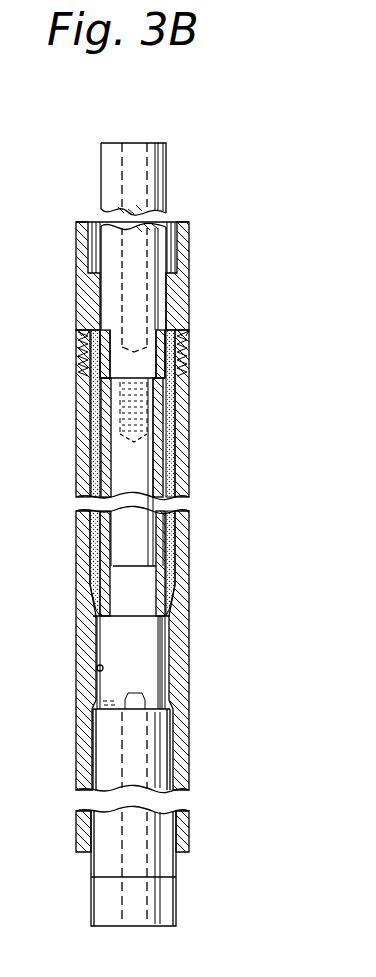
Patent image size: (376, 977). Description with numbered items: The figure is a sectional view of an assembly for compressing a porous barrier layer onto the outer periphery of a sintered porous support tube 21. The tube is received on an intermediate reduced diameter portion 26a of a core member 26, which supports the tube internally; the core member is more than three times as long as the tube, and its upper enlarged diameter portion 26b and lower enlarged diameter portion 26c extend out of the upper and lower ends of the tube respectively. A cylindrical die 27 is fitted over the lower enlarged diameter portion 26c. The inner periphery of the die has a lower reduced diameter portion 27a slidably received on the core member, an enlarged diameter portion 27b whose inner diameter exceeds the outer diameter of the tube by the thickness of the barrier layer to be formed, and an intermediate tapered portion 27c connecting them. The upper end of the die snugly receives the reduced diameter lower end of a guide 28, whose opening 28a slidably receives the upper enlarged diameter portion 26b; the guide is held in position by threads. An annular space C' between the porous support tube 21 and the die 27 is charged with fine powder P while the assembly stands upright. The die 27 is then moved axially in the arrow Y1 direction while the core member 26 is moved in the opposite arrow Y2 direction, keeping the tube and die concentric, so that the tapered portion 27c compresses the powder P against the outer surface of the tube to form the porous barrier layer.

The porous support tube 21 is at (98, 460).
The core member 26 is at (145, 478).
The intermediate reduced diameter portion 26a is at (135, 555).
The upper enlarged diameter portion 26b is at (158, 258).
The lower enlarged diameter portion 26c is at (160, 668).
The cylindrical die 27 is at (84, 550).
The lower reduced diameter portion 27a is at (97, 668).
The enlarged diameter portion 27b is at (170, 432).
The intermediate tapered portion 27c is at (170, 604).
The guide 28 is at (80, 298).
The opening 28a is at (158, 303).
The annular space C' is at (108, 413).
The fine powder P is at (92, 590).
The arrow direction Y1 is at (55, 212).
The arrow direction Y2 is at (179, 162).